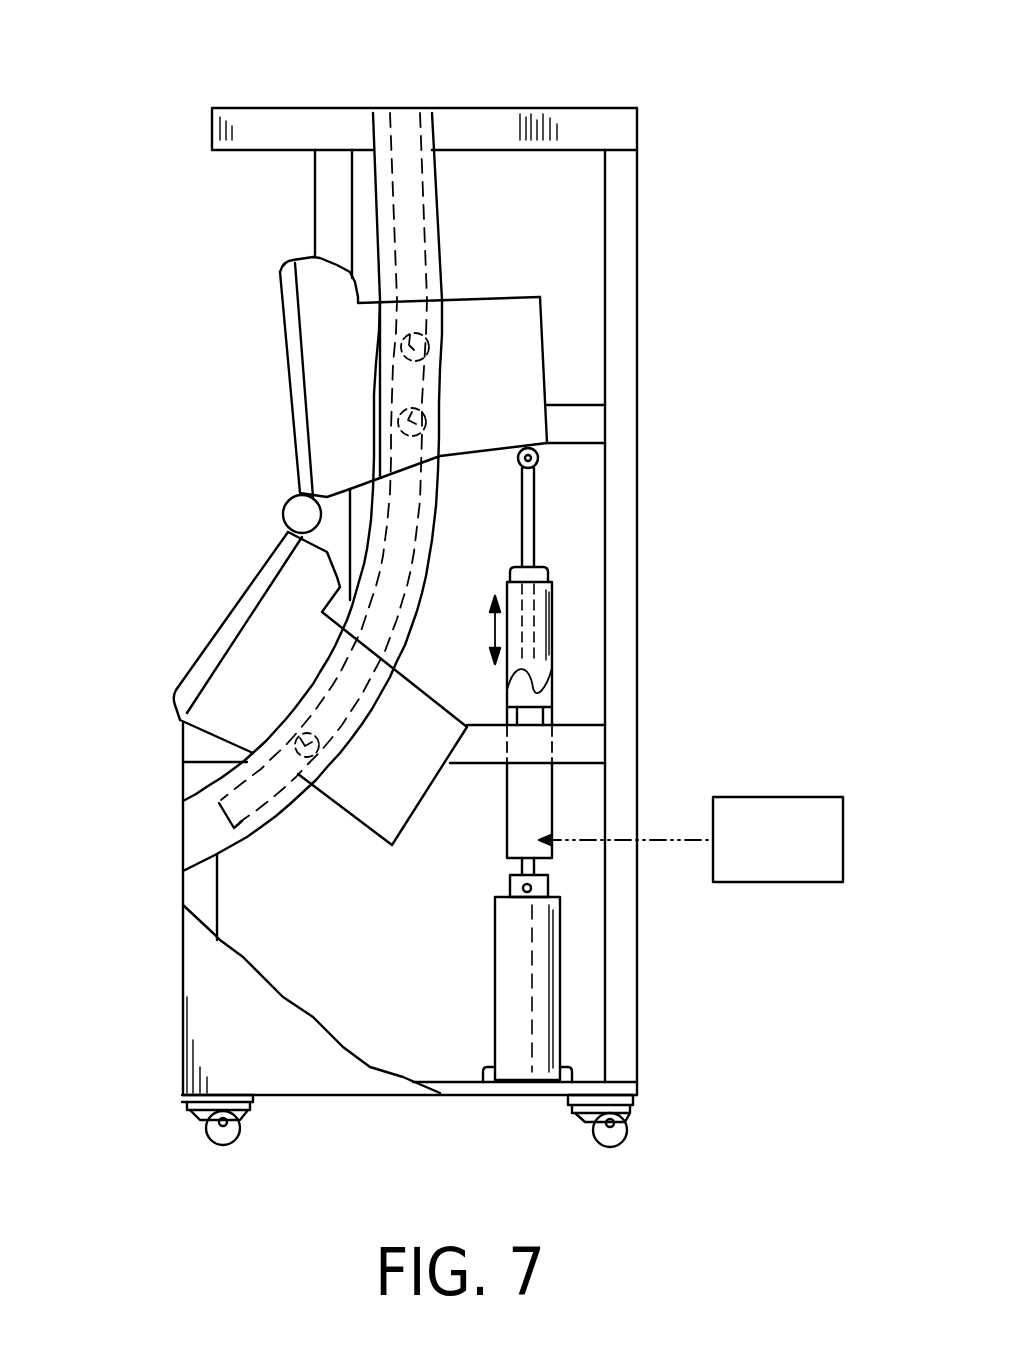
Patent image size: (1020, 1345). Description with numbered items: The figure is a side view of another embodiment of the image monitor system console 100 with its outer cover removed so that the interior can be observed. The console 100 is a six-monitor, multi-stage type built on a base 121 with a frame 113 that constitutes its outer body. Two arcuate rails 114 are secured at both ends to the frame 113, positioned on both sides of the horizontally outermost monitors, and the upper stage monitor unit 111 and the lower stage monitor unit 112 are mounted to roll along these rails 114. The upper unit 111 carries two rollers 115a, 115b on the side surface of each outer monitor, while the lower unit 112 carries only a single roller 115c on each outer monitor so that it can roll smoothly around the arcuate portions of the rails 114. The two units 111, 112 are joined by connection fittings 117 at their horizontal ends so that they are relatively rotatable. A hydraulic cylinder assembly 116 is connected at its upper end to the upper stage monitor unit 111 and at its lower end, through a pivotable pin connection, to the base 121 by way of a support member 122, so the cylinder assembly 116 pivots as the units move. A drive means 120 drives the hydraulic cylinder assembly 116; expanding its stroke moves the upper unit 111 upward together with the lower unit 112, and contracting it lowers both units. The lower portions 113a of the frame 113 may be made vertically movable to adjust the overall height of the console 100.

The image monitor system console 100 is at (458, 588).
The upper stage monitor unit 111 is at (280, 325).
The lower stage monitor unit 112 is at (220, 623).
The frame 113 is at (592, 110).
The lower portions of the frame 113a is at (185, 877).
The rails 114 is at (440, 178).
The roller 115a is at (422, 332).
The roller 115b is at (420, 408).
The roller 115c is at (318, 755).
The hydraulic cylinder assembly 116 is at (553, 628).
The connection fitting 117 is at (277, 497).
The drive means 120 is at (802, 797).
The base 121 is at (637, 1093).
The support member 122 is at (527, 1080).